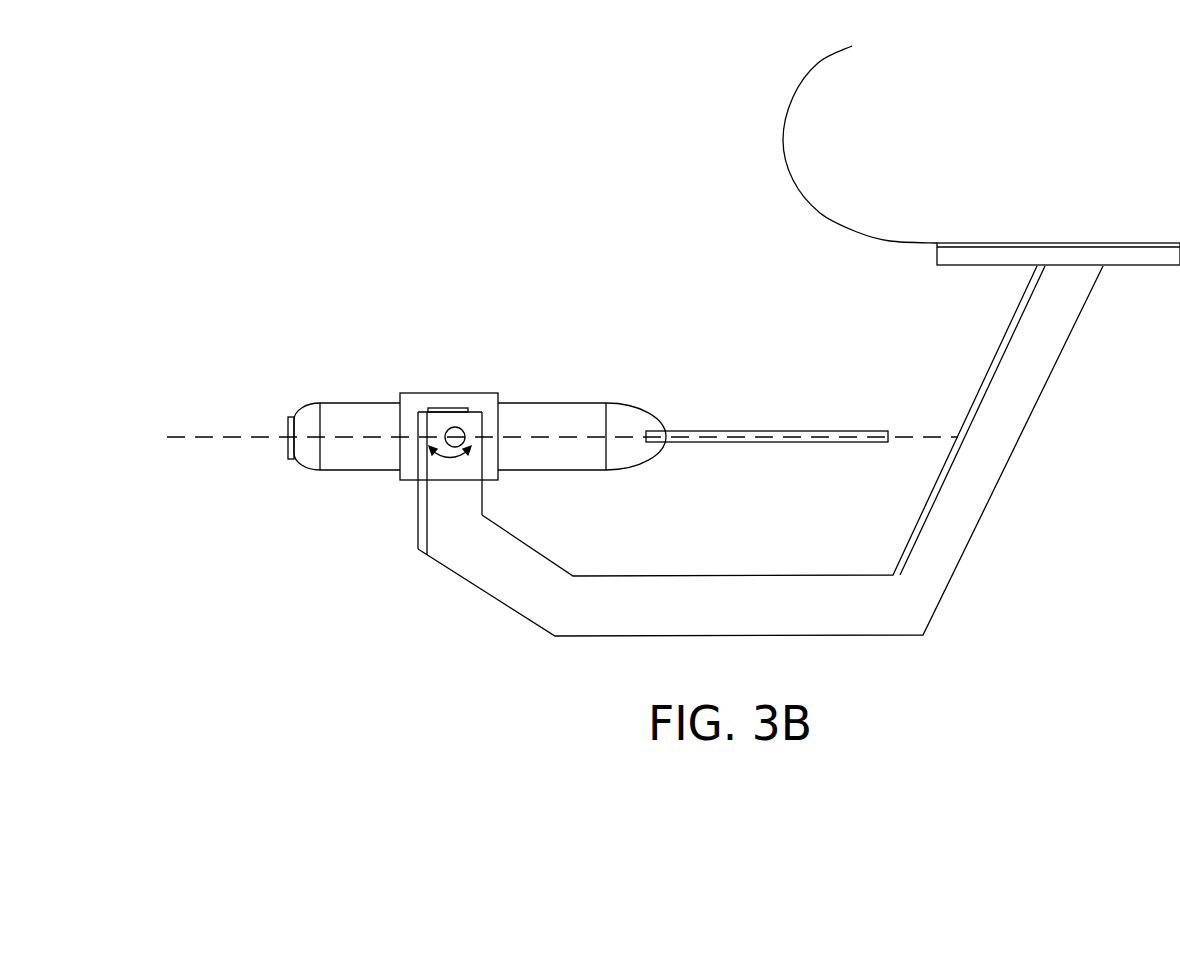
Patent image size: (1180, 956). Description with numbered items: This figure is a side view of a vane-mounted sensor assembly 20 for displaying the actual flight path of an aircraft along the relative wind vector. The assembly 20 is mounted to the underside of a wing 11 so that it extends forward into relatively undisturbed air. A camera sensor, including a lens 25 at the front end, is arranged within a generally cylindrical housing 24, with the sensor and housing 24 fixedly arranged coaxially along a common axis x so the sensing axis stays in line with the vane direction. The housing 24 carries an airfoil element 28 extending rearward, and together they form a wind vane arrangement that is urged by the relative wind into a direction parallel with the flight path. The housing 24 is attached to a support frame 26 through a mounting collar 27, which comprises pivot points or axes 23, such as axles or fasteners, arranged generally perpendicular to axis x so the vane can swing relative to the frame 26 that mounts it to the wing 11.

The wing 11 is at (810, 173).
The sensor assembly 20 is at (623, 427).
The pivot points or axes 23 is at (455, 435).
The housing 24 is at (362, 413).
The lens 25 is at (287, 428).
The support frame 26 is at (978, 485).
The mounting collar 27 is at (415, 400).
The airfoil element 28 is at (765, 431).